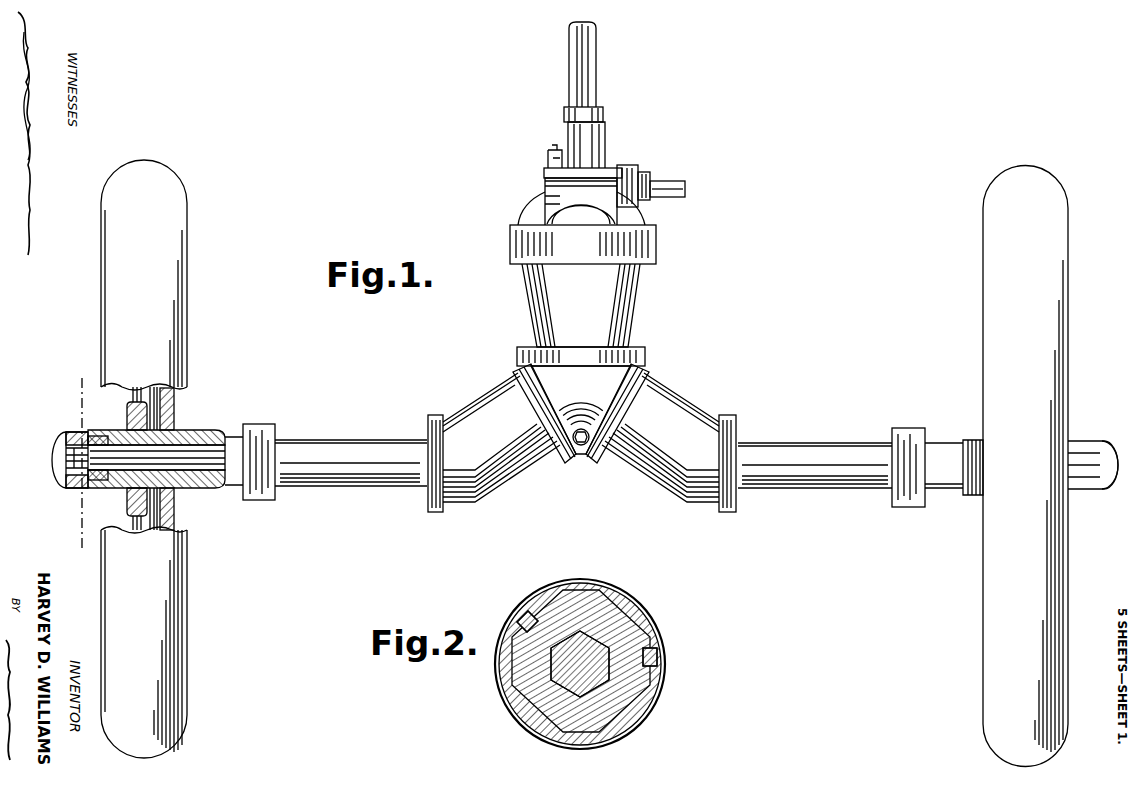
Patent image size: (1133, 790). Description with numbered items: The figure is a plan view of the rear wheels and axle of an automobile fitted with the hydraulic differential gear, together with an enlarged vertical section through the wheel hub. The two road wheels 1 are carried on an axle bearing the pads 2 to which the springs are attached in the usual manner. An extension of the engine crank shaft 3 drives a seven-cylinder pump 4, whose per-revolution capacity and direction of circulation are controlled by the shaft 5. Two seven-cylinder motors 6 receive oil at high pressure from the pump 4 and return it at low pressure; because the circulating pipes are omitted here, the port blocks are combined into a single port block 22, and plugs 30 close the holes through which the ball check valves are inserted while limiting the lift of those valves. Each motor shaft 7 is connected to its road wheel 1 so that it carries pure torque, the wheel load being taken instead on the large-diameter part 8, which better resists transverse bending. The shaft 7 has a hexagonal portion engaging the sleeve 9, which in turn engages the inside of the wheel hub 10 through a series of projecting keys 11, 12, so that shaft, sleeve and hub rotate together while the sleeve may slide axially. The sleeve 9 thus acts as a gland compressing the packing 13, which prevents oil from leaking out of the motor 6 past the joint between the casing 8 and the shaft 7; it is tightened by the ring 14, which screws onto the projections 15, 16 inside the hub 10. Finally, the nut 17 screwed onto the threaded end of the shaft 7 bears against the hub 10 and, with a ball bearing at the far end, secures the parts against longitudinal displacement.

In FIG. 1, the road wheel 1 is at (584, 463).
In FIG. 1, the pad 2 is at (912, 422).
In FIG. 1, the extension of the engine crank shaft 3 is at (590, 68).
In FIG. 1, the seven-cylinder pump 4 is at (583, 236).
In FIG. 1, the shaft 5 is at (672, 184).
In FIG. 1, the seven-cylinder motor 6 is at (582, 438).
In FIG. 1, the motor shaft 7 is at (156, 457).
In FIG. 2, the motor shaft 7 is at (580, 664).
In FIG. 1, the part (casing) 8 is at (207, 440).
In FIG. 2, the part (casing) 8 is at (580, 664).
In FIG. 2, the sleeve 9 is at (545, 615).
In FIG. 2, the wheel hub 10 is at (625, 608).
In FIG. 2, the projecting key 11 is at (655, 632).
In FIG. 2, the projecting key 12 is at (660, 698).
In FIG. 1, the packing 13 is at (92, 488).
In FIG. 1, the ring 14 is at (62, 482).
In FIG. 2, the projection 15 is at (516, 624).
In FIG. 2, the projection 16 is at (538, 720).
In FIG. 1, the nut 17 is at (62, 446).
In FIG. 1, the port block 22 is at (581, 410).
In FIG. 1, the plug 30 is at (581, 446).